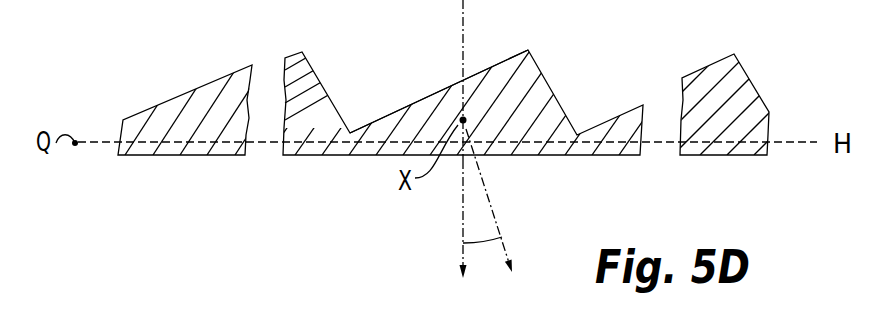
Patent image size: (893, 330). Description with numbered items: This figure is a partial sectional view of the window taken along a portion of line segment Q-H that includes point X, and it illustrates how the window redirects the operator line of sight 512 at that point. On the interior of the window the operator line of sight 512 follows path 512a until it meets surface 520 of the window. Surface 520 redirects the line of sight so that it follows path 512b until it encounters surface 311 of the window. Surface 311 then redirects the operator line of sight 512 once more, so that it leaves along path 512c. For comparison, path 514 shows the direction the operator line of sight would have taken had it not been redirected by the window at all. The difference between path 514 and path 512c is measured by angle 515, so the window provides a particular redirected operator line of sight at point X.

The surface 311 is at (375, 155).
The surface 520 is at (398, 110).
The operator line of sight 512 is at (445, 13).
The path 512a is at (463, 2).
The path 512b is at (468, 113).
The path 512c is at (497, 217).
The path 514 is at (462, 251).
The angle 515 is at (488, 243).